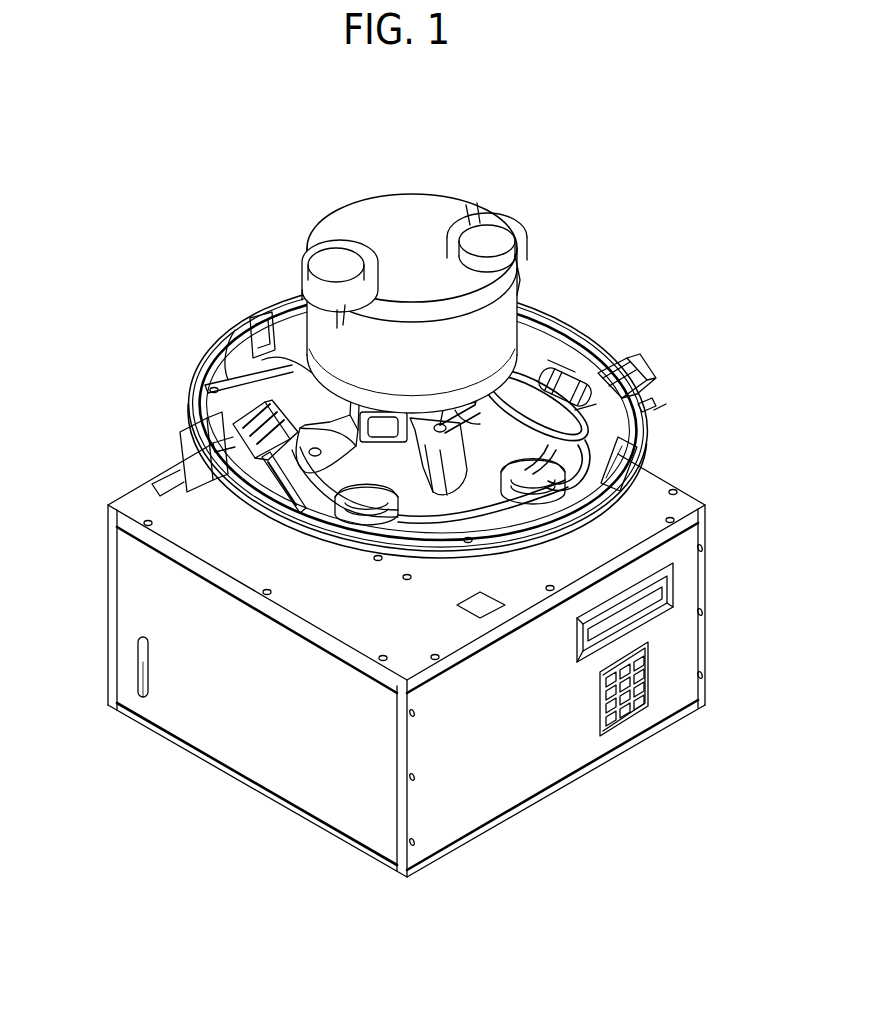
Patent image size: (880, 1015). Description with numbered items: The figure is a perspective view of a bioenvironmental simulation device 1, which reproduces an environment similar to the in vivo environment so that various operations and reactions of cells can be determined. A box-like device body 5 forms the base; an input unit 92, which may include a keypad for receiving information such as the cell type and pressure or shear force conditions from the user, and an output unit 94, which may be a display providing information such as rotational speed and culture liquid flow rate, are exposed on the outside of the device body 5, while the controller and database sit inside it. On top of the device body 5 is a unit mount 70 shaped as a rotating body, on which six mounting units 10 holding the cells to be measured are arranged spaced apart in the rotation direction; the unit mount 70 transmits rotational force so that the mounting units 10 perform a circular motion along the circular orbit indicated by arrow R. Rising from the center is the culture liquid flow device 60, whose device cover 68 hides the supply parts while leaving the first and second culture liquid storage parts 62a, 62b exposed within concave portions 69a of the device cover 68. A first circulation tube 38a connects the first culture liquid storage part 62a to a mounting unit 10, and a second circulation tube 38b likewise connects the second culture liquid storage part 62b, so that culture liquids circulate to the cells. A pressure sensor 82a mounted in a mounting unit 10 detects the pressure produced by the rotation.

The bioenvironmental simulation device 1 is at (172, 265).
The device body 5 is at (283, 778).
The mounting unit 10 is at (300, 508).
The first circulation tube 38a is at (285, 483).
The second circulation tube 38b is at (262, 465).
The culture liquid flow device 60 is at (438, 182).
The first culture liquid storage part 62a is at (497, 235).
The second culture liquid storage part 62b is at (323, 257).
The device cover 68 is at (393, 207).
The concave portion 69a is at (337, 272).
The unit mount 70 is at (572, 343).
The pressure sensor 82a is at (180, 477).
The input unit 92 is at (645, 707).
The output unit 94 is at (667, 595).
The arrow R is at (620, 497).